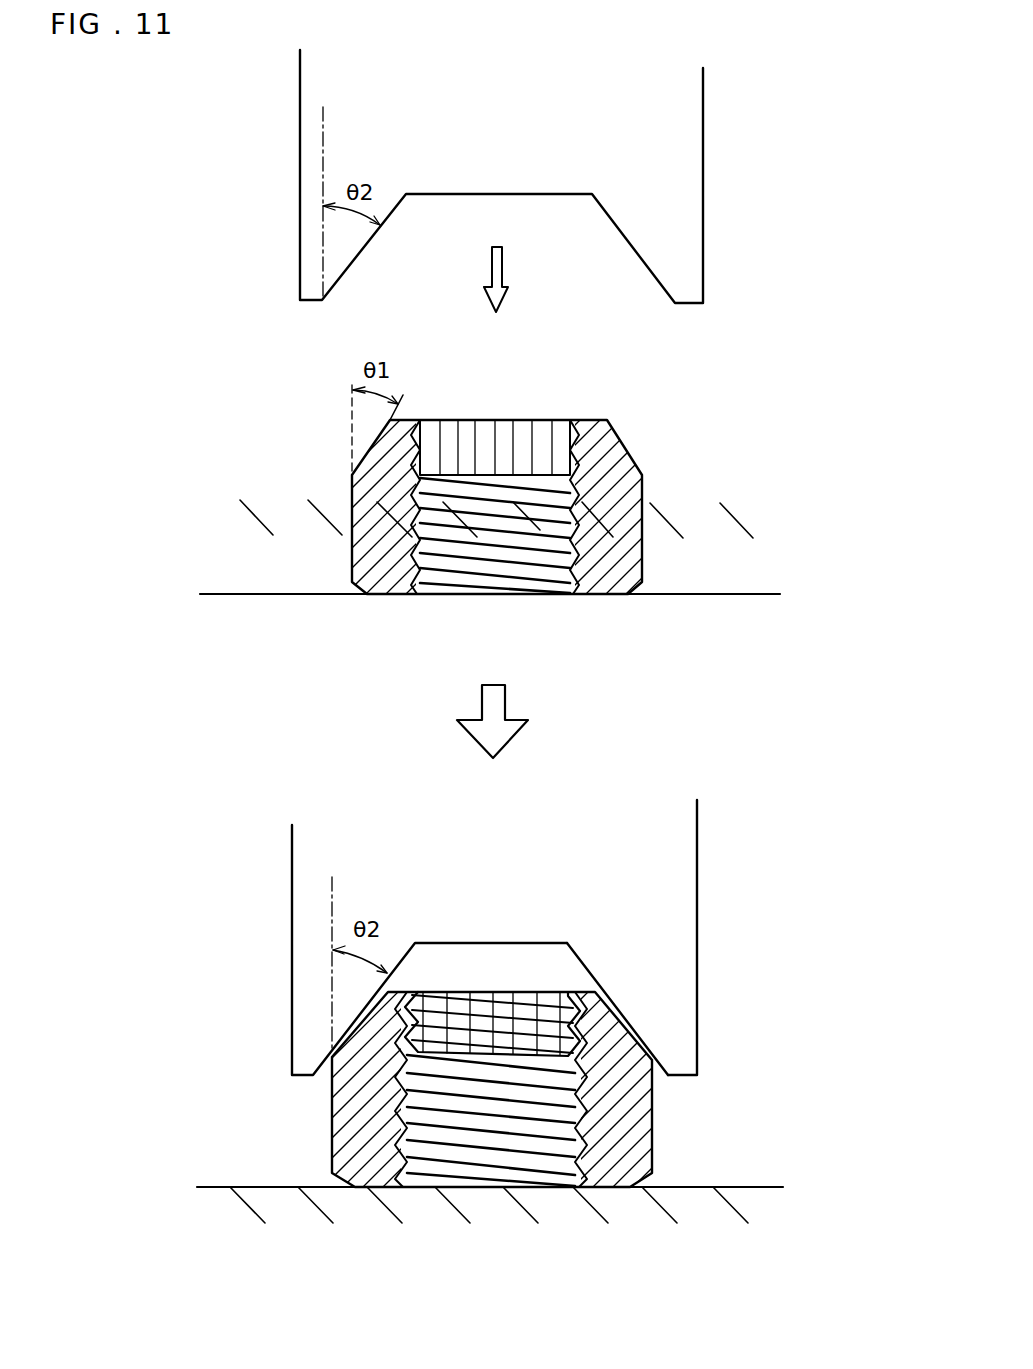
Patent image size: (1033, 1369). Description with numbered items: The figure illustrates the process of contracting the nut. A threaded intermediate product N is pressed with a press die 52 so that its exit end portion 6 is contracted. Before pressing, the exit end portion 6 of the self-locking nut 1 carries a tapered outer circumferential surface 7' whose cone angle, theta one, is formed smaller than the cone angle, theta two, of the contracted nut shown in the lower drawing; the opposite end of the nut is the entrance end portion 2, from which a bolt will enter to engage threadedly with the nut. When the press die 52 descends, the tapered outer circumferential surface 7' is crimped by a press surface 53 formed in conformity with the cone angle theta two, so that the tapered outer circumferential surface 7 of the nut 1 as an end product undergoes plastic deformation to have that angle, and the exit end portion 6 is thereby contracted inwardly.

The self-locking nut 1 is at (701, 1137).
The entrance end portion 2 is at (635, 470).
The exit end portion 6 is at (275, 452).
The tapered outer circumferential surface 7 is at (387, 982).
The tapered outer circumferential surface 7' is at (405, 433).
The press die 52 is at (637, 135).
The press surface 53 is at (614, 1028).
The nut N is at (695, 512).